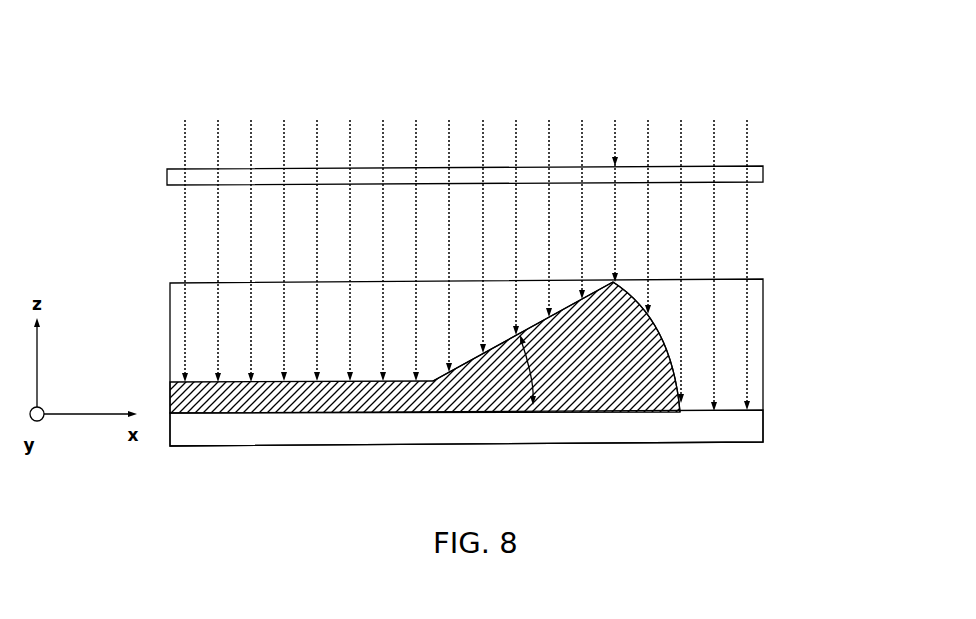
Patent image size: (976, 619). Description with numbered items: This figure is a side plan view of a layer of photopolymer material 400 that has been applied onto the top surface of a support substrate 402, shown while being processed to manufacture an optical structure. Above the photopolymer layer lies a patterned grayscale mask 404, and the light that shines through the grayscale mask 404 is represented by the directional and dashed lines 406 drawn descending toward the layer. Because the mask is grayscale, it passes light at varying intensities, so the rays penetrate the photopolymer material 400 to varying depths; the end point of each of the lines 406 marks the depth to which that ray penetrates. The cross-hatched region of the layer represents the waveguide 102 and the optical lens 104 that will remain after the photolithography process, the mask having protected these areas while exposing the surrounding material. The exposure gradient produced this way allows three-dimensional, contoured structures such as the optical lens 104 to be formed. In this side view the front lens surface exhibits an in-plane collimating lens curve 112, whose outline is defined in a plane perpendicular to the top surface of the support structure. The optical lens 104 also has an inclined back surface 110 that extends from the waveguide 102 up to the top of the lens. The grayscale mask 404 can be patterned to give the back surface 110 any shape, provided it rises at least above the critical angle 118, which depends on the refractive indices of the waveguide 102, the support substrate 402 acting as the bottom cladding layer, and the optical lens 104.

The directional and dashed lines 406 is at (249, 136).
The patterned grayscale mask 404 is at (763, 172).
The layer of photopolymer material 400 is at (763, 323).
The support substrate 402 is at (763, 425).
The waveguide 102 is at (176, 380).
The back surface 110 is at (500, 333).
The optical lens 104 is at (544, 312).
The in-plane collimating lens curve 112 is at (632, 286).
The critical angle 118 is at (522, 334).